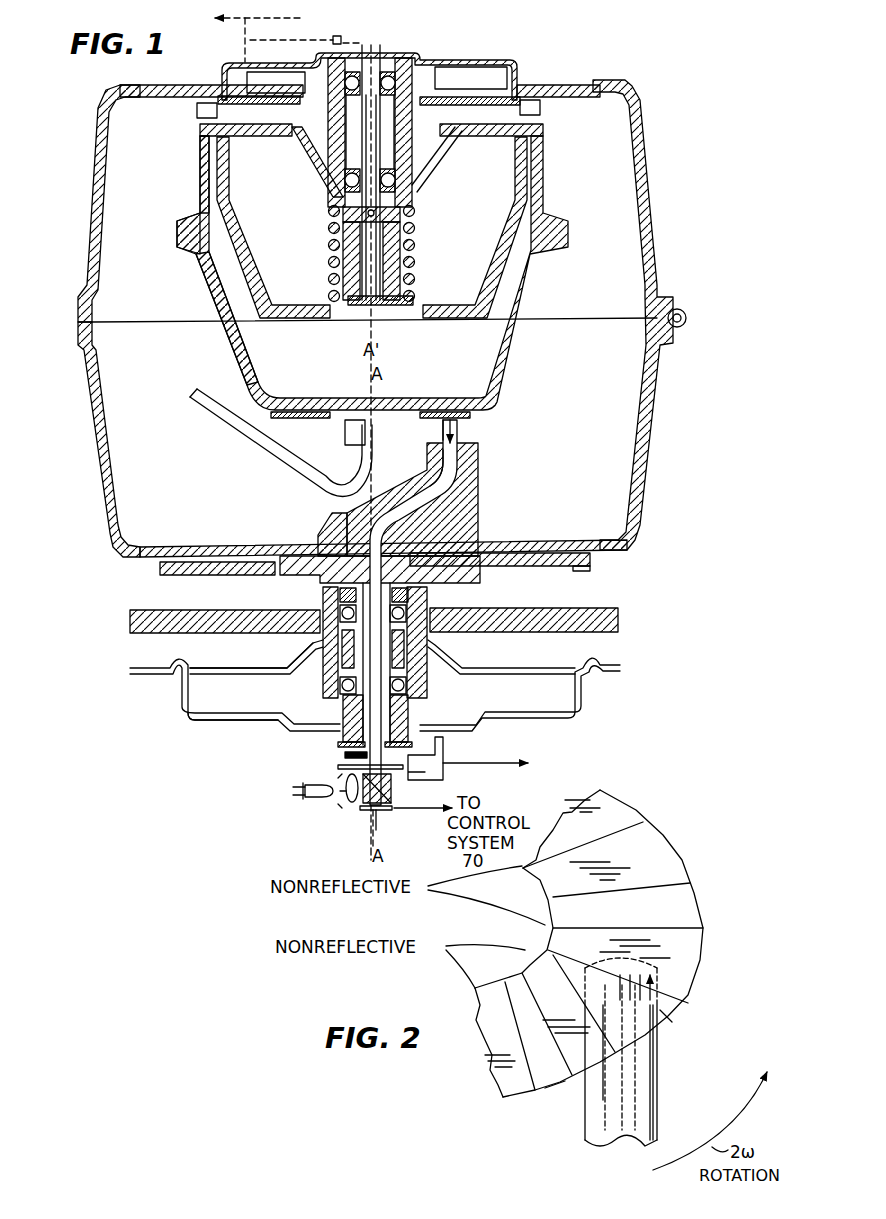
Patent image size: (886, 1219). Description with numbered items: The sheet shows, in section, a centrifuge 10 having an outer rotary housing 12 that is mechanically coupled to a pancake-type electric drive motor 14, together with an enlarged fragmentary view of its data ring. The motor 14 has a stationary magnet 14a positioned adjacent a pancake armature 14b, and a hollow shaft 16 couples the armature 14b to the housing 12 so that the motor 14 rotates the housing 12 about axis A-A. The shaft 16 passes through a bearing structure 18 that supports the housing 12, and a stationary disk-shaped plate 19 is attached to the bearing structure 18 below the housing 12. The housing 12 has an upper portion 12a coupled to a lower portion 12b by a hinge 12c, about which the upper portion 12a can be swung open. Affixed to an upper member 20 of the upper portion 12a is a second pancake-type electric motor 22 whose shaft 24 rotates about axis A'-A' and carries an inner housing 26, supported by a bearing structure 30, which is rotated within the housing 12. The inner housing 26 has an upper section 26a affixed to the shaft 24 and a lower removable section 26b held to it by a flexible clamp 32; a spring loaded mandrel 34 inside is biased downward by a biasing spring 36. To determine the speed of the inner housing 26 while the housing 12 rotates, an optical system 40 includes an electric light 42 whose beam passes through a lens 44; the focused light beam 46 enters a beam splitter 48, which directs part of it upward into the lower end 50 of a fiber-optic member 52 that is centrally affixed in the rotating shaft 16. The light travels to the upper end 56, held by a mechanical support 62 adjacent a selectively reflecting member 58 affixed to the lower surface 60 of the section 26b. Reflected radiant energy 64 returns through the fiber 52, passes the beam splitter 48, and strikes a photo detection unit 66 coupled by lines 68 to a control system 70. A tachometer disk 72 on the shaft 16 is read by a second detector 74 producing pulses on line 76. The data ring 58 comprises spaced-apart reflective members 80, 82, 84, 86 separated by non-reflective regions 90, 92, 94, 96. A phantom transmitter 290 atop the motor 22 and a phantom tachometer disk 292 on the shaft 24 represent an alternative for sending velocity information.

In FIG. 1, the centrifuge 10 is at (660, 75).
In FIG. 1, the outer rotary housing 12 is at (650, 165).
In FIG. 1, the upper portion 12a is at (103, 157).
In FIG. 1, the lower portion 12b is at (98, 432).
In FIG. 1, the hinge 12c is at (686, 312).
In FIG. 1, the electric drive motor 14 is at (622, 667).
In FIG. 1, the stationary magnet 14a is at (235, 700).
In FIG. 1, the pancake armature 14b is at (251, 654).
In FIG. 1, the hollow shaft 16 is at (428, 612).
In FIG. 1, the bearing structure 18 is at (322, 604).
In FIG. 1, the stationary disk-shaped plate 19 is at (130, 625).
In FIG. 1, the upper member 20 is at (570, 85).
In FIG. 1, the second pancake-type electric motor 22 is at (472, 58).
In FIG. 1, the shaft 24 is at (410, 130).
In FIG. 1, the inner housing 26 is at (546, 165).
In FIG. 1, the upper section 26a is at (205, 168).
In FIG. 1, the lower removable section 26b is at (205, 287).
In FIG. 1, the bearing structure 30 is at (332, 172).
In FIG. 1, the flexible clamp 32 is at (175, 235).
In FIG. 1, the spring loaded mandrel 34 is at (246, 262).
In FIG. 1, the biasing spring 36 is at (416, 218).
In FIG. 1, the optical system 40 is at (332, 758).
In FIG. 1, the source of radiant energy 42 is at (318, 798).
In FIG. 1, the lens 44 is at (350, 804).
In FIG. 1, the focused light beam 46 is at (443, 432).
In FIG. 1, the beam splitter 48 is at (393, 785).
In FIG. 1, the end of fiber-optic member 50 is at (338, 768).
In FIG. 1, the fiber-optic radiant energy transmitting member 52 is at (332, 515).
In FIG. 2, the fiber-optic radiant energy transmitting member 52 is at (660, 1093).
In FIG. 1, the upper end 56 is at (459, 448).
In FIG. 1, the selectively reflecting member 58 is at (470, 417).
In FIG. 2, the selectively reflecting member 58 is at (683, 845).
In FIG. 1, the lower surface 60 is at (333, 425).
In FIG. 1, the mechanical support 62 is at (479, 500).
In FIG. 1, the reflected radiant energy 64 is at (458, 428).
In FIG. 1, the photo detection unit 66 is at (372, 815).
In FIG. 1, the lines 68 is at (380, 812).
In FIG. 1, the control system 70 is at (596, 757).
In FIG. 1, the tachometer disk 72 is at (346, 754).
In FIG. 1, the second detector 74 is at (444, 750).
In FIG. 1, the line 76 is at (476, 763).
In FIG. 2, the reflective member 80 is at (478, 1012).
In FIG. 2, the reflective member 82 is at (520, 975).
In FIG. 2, the reflective member 84 is at (547, 938).
In FIG. 2, the reflective member 86 is at (545, 893).
In FIG. 2, the non-reflective region 90 is at (555, 1083).
In FIG. 2, the non-reflective region 92 is at (668, 1018).
In FIG. 2, the non-reflective region 94 is at (692, 908).
In FIG. 2, the non-reflective region 96 is at (628, 808).
In FIG. 1, the transmitter 290 is at (278, 33).
In FIG. 1, the tachometer disk 292 is at (395, 43).